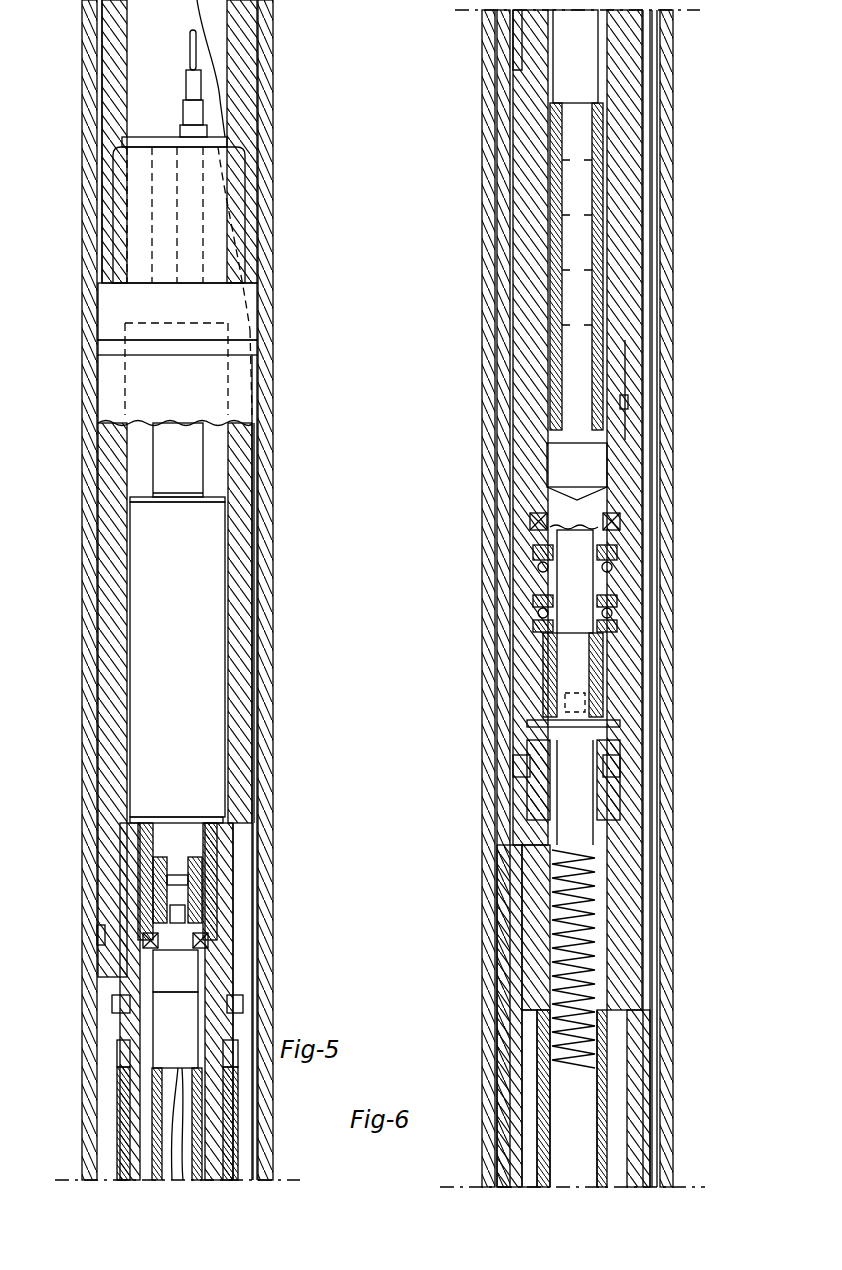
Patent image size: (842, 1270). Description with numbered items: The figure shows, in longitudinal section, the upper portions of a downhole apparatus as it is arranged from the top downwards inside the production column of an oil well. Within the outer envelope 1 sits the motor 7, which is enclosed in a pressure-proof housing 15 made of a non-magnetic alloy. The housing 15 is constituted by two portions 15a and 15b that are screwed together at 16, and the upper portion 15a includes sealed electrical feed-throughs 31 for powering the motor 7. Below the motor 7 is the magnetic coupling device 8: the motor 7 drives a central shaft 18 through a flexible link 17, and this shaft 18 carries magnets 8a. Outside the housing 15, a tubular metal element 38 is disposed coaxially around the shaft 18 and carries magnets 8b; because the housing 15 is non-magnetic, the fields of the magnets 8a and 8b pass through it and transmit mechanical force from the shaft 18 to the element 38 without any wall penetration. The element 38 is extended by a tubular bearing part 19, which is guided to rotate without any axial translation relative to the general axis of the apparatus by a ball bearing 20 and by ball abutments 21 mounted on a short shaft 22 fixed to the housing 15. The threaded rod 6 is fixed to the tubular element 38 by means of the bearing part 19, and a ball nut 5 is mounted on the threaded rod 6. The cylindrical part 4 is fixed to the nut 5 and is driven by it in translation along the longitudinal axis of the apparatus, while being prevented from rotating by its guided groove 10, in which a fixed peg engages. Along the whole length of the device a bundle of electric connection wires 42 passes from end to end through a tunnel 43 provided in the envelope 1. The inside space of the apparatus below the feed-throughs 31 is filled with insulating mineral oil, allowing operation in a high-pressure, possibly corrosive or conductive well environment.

In FIG. 5, the envelope 1 is at (73, 611).
In FIG. 6, the envelope 1 is at (682, 764).
In FIG. 6, the cylindrical part 4 is at (540, 1090).
In FIG. 6, the nut 5 is at (607, 888).
In FIG. 6, the threaded rod 6 is at (578, 1095).
In FIG. 5, the motor 7 is at (184, 646).
In FIG. 5, the magnetic coupling device 8 is at (240, 1147).
In FIG. 6, the magnetic coupling device 8 is at (649, 292).
In FIG. 5, the magnets 8a is at (175, 1086).
In FIG. 6, the magnets 8a is at (592, 360).
In FIG. 5, the magnets 8b is at (117, 1074).
In FIG. 6, the magnets 8b is at (627, 404).
In FIG. 6, the guided groove 10 is at (525, 1158).
In FIG. 5, the pressure-proof housing 15 is at (252, 636).
In FIG. 5, the housing portion 15a is at (240, 466).
In FIG. 5, the housing portion 15b is at (137, 1134).
In FIG. 6, the housing portion 15b is at (613, 334).
In FIG. 5, the screwed joint 16 is at (100, 936).
In FIG. 5, the flexible link 17 is at (180, 822).
In FIG. 5, the central shaft 18 is at (184, 986).
In FIG. 6, the central shaft 18 is at (586, 76).
In FIG. 6, the tubular bearing part 19 is at (630, 674).
In FIG. 6, the ball bearing 20 is at (613, 522).
In FIG. 6, the ball abutments 21 is at (620, 590).
In FIG. 6, the short shaft 22 is at (587, 596).
In FIG. 5, the sealed electrical feed-throughs 31 is at (190, 100).
In FIG. 6, the tubular metal element 38 is at (630, 393).
In FIG. 5, the bundle of electric connection wires 42 is at (258, 688).
In FIG. 5, the tunnel 43 is at (258, 855).